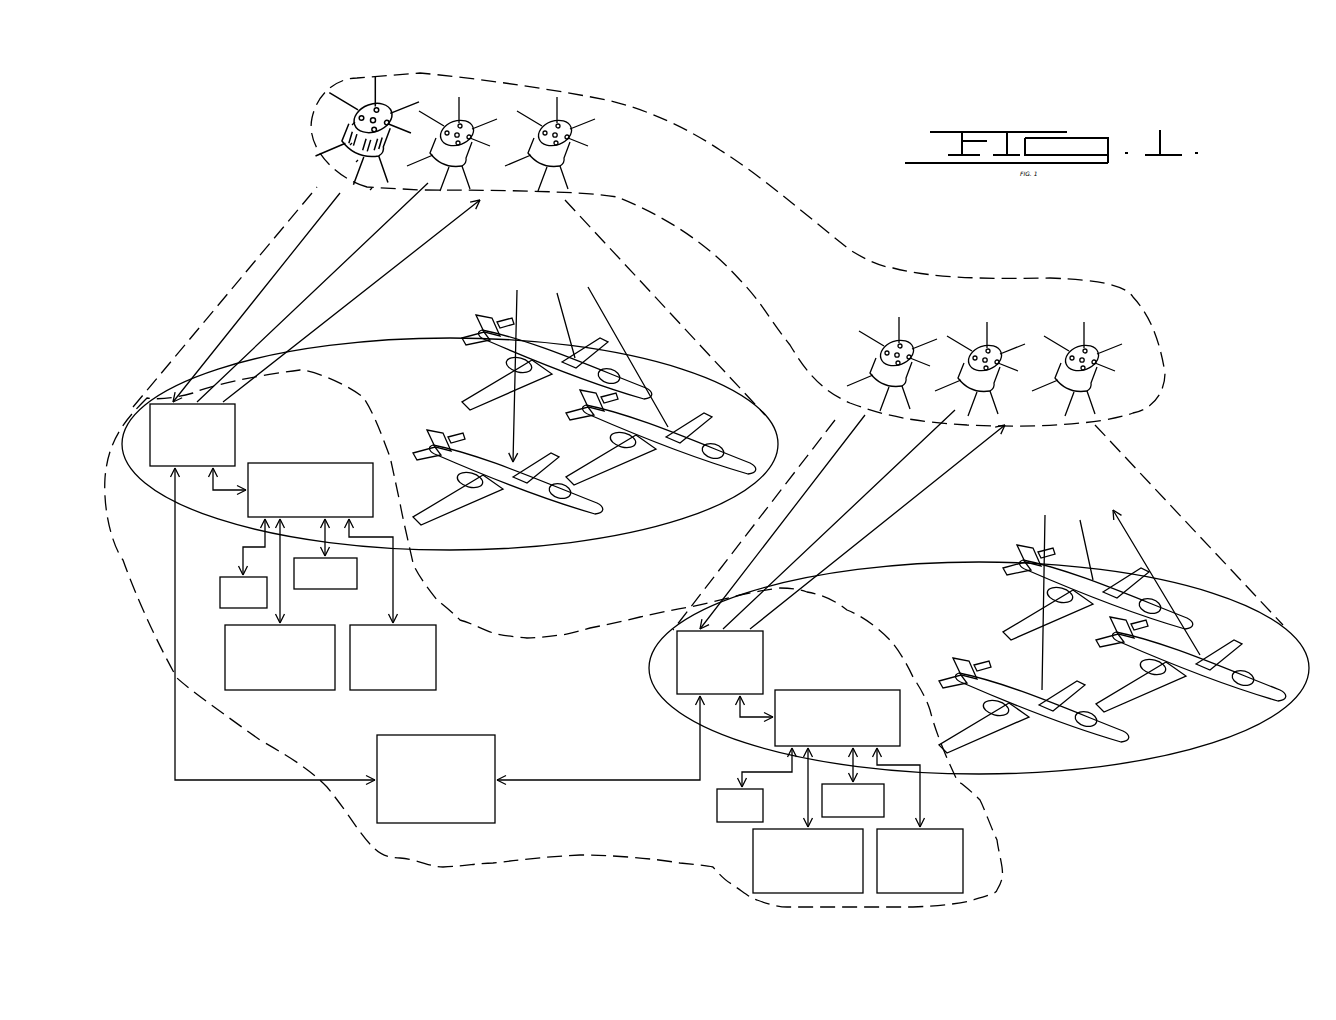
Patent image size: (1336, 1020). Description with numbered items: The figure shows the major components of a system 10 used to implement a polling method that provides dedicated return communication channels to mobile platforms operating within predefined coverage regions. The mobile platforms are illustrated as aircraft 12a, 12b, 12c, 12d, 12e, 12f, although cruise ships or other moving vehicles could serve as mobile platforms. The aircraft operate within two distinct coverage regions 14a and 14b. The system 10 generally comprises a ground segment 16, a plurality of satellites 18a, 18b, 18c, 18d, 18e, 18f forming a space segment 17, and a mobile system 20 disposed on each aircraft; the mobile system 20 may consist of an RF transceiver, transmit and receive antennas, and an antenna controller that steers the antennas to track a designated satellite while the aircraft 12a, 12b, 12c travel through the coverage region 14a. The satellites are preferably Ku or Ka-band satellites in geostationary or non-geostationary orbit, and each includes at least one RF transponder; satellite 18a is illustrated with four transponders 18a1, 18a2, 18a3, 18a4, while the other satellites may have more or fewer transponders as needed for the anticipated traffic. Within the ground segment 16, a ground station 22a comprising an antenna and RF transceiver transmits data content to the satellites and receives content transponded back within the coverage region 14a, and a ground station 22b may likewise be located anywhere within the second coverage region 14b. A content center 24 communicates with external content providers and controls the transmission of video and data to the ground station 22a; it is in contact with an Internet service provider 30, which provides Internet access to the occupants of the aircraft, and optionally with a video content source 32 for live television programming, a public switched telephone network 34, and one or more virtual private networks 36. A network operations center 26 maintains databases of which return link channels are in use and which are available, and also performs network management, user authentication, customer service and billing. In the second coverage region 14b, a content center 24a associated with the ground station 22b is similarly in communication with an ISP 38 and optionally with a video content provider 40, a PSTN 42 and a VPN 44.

The system 10 is at (1222, 440).
The mobile platform 12a is at (455, 503).
The mobile platform 12b is at (497, 318).
The mobile platform 12c is at (653, 455).
The mobile platform 12d is at (986, 727).
The mobile platform 12e is at (1023, 538).
The mobile platform 12f is at (1176, 683).
The coverage region 14a is at (402, 350).
The coverage region 14b is at (955, 577).
The ground segment 16 is at (398, 859).
The space segment 17 is at (783, 192).
The satellite 18a is at (399, 120).
The transponder 18a1 is at (353, 122).
The transponder 18a2 is at (352, 143).
The transponder 18a3 is at (357, 160).
The transponder 18a4 is at (370, 204).
The satellite 18b is at (483, 120).
The satellite 18c is at (585, 152).
The satellite 18d is at (872, 357).
The satellite 18e is at (980, 341).
The satellite 18f is at (1077, 341).
The mobile system 20 is at (566, 372).
The ground station 22a is at (152, 408).
The ground station 22b is at (678, 665).
The content center 24 is at (257, 508).
The content center 24a is at (782, 733).
The network operations center 26 is at (483, 750).
The Internet service provider 30 is at (236, 607).
The video content source 32 is at (398, 690).
The public switched telephone network 34 is at (322, 588).
The virtual private network 36 is at (290, 690).
The Internet service provider 38 is at (716, 800).
The video content provider 40 is at (960, 855).
The public switched telephone network 42 is at (885, 803).
The virtual private network 44 is at (755, 858).